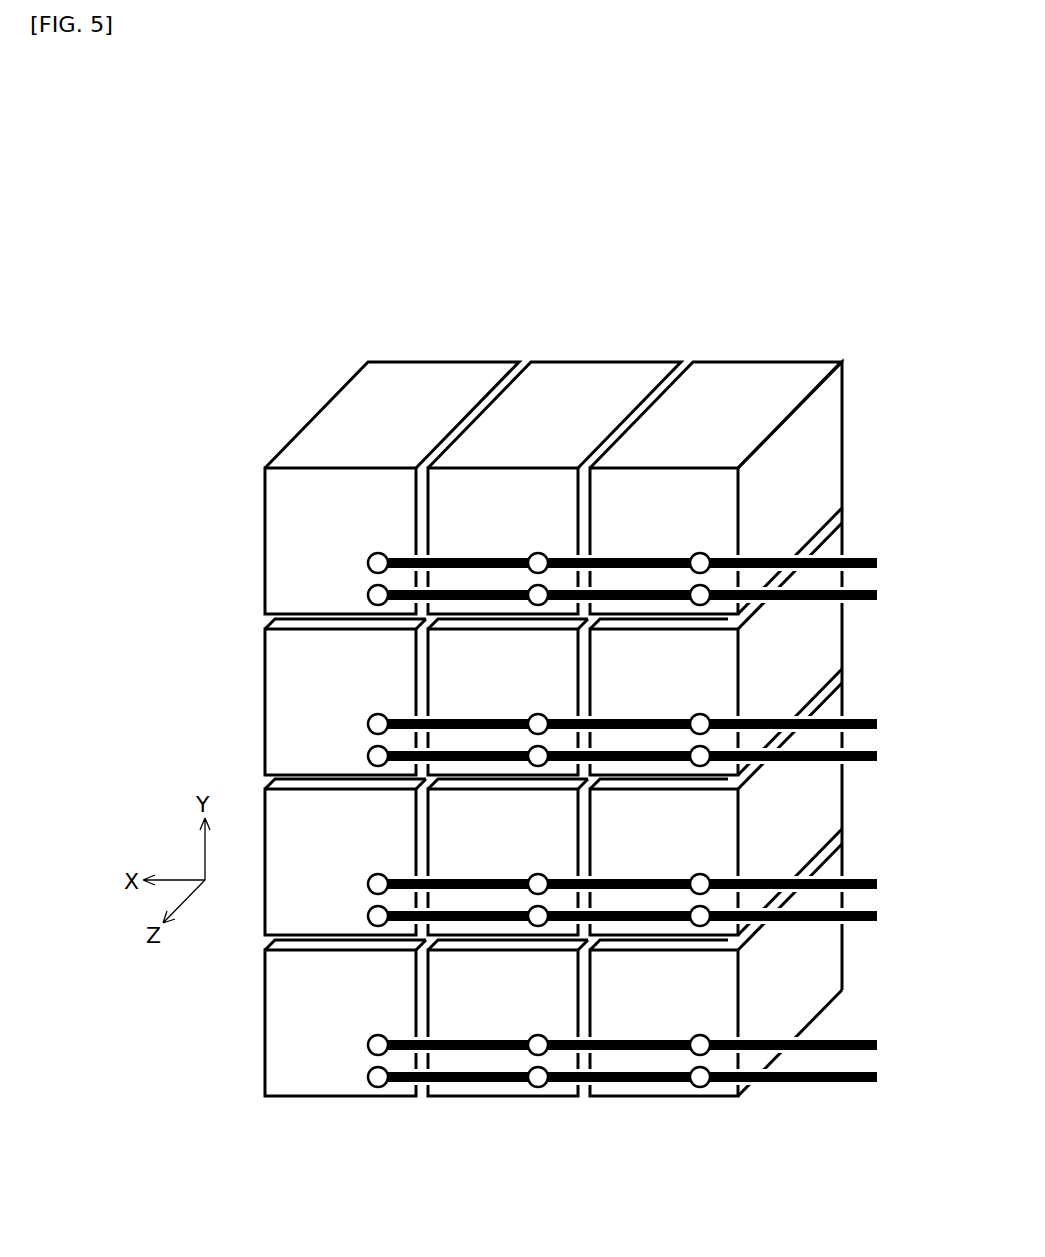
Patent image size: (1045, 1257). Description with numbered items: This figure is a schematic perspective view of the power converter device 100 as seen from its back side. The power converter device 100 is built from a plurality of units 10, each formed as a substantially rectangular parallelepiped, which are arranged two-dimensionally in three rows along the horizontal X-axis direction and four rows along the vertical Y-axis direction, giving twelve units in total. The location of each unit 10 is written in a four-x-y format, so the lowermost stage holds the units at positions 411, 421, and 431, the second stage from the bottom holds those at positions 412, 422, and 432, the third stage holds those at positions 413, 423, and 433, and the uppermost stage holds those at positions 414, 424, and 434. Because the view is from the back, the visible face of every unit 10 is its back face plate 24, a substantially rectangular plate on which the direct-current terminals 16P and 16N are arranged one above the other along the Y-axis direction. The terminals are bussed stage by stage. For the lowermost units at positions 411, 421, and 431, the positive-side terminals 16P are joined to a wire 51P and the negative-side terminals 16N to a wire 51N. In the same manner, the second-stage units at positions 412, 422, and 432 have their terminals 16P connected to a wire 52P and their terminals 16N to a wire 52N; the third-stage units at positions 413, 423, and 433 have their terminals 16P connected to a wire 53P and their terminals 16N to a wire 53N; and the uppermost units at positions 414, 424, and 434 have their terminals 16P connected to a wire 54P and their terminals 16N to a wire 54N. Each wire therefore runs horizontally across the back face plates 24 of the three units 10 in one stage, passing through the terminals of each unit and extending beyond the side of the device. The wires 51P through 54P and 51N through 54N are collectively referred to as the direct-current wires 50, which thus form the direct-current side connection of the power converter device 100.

The power converter device 100 is at (562, 695).
The unit 10 is at (790, 470).
The direct-current wires 50 is at (562, 789).
The wire 54P is at (878, 563).
The wire 54N is at (878, 595).
The wire 53P is at (878, 724).
The wire 53N is at (878, 756).
The wire 52P is at (878, 884).
The wire 52N is at (878, 916).
The wire 51P is at (878, 1045).
The wire 51N is at (878, 1077).
The back face plate 24 is at (357, 568).
The direct-current terminal 16P is at (367, 564).
The direct-current terminal 16N is at (367, 596).
The position 434 is at (376, 524).
The position 424 is at (544, 524).
The position 414 is at (716, 524).
The position 433 is at (376, 685).
The position 423 is at (544, 685).
The position 413 is at (716, 685).
The position 432 is at (376, 845).
The position 422 is at (544, 845).
The position 412 is at (716, 845).
The position 431 is at (376, 1006).
The position 421 is at (544, 1006).
The position 411 is at (716, 1006).